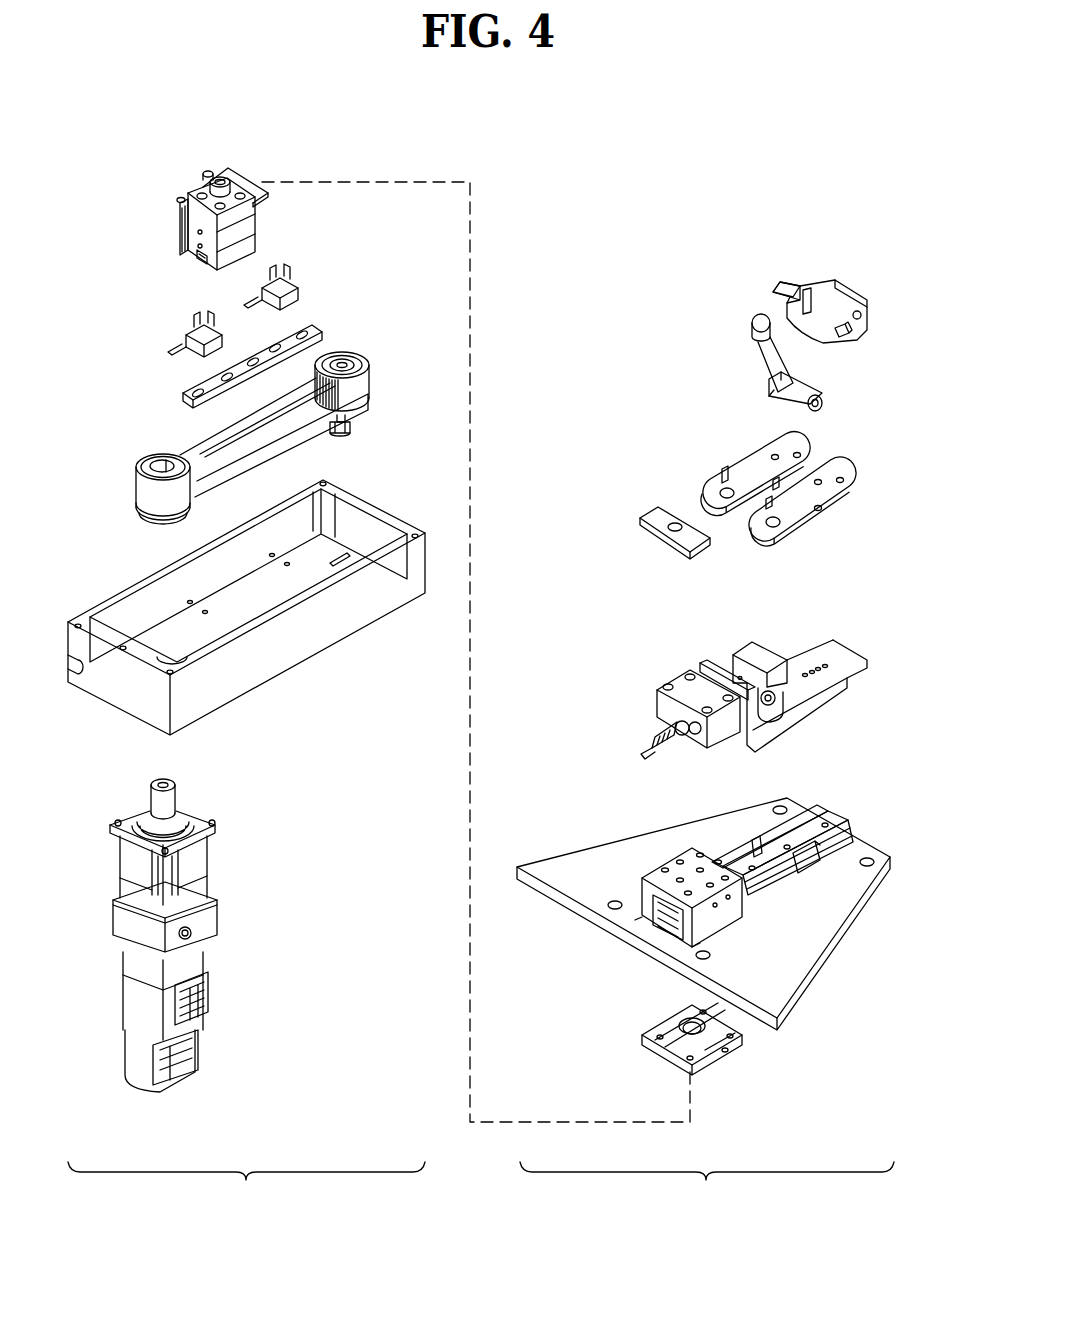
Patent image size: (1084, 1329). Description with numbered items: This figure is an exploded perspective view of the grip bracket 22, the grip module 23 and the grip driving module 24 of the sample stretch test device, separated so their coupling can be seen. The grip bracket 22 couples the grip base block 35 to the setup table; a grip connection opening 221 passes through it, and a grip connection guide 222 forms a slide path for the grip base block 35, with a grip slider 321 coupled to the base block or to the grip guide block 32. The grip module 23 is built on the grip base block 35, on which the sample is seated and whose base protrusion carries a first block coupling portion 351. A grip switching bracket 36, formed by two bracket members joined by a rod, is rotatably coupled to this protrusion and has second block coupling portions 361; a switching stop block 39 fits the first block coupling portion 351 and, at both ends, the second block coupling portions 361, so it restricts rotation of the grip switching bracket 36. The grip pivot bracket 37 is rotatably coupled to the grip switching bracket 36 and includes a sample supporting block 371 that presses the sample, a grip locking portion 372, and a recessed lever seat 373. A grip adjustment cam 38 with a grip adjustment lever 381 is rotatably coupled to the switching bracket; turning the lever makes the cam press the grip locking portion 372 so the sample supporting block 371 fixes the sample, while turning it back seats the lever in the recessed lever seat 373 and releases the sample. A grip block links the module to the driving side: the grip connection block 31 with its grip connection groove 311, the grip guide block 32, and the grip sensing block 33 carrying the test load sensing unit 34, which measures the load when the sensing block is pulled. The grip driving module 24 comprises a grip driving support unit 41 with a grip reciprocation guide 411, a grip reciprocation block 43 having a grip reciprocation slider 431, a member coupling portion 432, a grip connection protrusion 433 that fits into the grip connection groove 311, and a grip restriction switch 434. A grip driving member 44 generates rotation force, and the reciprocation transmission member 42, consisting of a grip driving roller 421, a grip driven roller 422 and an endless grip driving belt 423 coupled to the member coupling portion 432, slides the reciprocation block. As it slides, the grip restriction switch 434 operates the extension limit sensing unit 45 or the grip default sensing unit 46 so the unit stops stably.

The grip bracket 22 is at (738, 914).
The grip connection opening 221 is at (770, 887).
The grip connection guide 222 is at (860, 849).
The grip module 23 is at (707, 1189).
The grip driving module 24 is at (246, 1189).
The grip connection block 31 is at (710, 1032).
The grip connection groove 311 is at (668, 1021).
The grip guide block 32 is at (658, 857).
The grip slider 321 is at (830, 815).
The grip sensing block 33 is at (660, 700).
The test load sensing unit 34 is at (646, 740).
The grip base block 35 is at (774, 662).
The first block coupling portion 351 is at (724, 660).
The grip switching bracket 36 is at (765, 461).
The second block coupling portions 361 is at (716, 475).
The grip pivot bracket 37 is at (849, 273).
The sample supporting block 371 is at (868, 336).
The grip locking portion 372 is at (808, 291).
The recessed lever seat 373 is at (788, 284).
The grip adjustment cam 38 is at (783, 362).
The grip adjustment lever 381 is at (762, 338).
The switching stop block 39 is at (652, 506).
The grip driving support unit 41 is at (300, 660).
The grip reciprocation guide 411 is at (320, 323).
The reciprocation transmission member 42 is at (252, 438).
The grip driving roller 421 is at (158, 450).
The grip driven roller 422 is at (368, 360).
The grip driving belt 423 is at (340, 430).
The grip reciprocation block 43 is at (246, 232).
The grip reciprocation slider 431 is at (200, 270).
The member coupling portion 432 is at (178, 229).
The grip connection protrusion 433 is at (204, 178).
The grip restriction switch 434 is at (222, 179).
The grip driving member 44 is at (246, 907).
The extension limit sensing unit 45 is at (184, 333).
The grip default sensing unit 46 is at (292, 286).